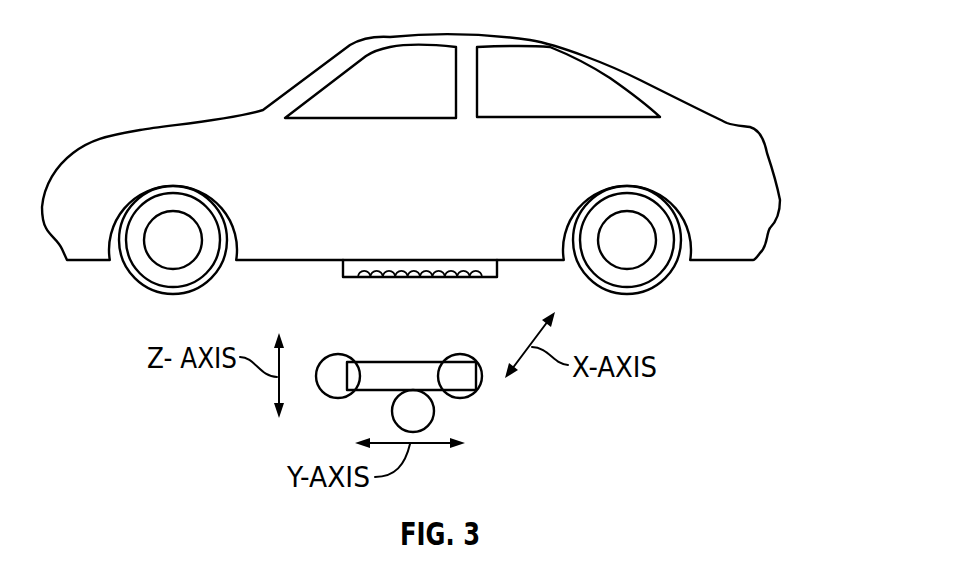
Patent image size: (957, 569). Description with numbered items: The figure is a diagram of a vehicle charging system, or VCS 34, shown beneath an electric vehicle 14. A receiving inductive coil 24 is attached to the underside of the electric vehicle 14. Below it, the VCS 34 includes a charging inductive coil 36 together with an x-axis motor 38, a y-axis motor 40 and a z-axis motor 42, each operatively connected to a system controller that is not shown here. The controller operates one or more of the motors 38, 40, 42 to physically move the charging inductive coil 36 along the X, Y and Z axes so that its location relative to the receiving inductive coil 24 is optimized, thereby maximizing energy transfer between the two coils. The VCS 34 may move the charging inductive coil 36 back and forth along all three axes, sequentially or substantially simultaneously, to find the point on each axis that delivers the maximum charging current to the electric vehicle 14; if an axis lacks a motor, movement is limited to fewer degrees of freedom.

The electric vehicle 14 is at (753, 160).
The receiving inductive coil 24 is at (478, 277).
The VCS 34 is at (108, 61).
The charging inductive coil 36 is at (363, 390).
The x-axis motor 38 is at (455, 368).
The y-axis motor 40 is at (337, 362).
The z-axis motor 42 is at (418, 408).